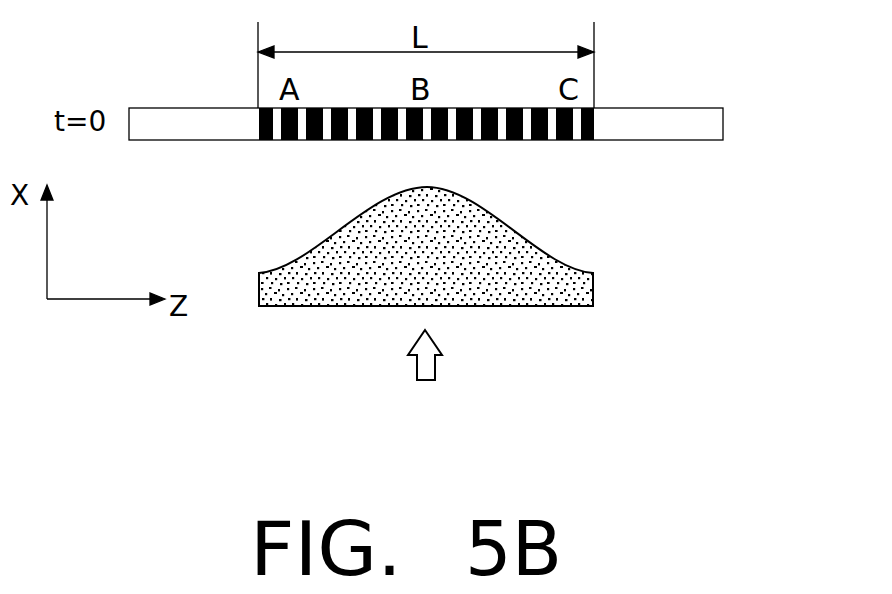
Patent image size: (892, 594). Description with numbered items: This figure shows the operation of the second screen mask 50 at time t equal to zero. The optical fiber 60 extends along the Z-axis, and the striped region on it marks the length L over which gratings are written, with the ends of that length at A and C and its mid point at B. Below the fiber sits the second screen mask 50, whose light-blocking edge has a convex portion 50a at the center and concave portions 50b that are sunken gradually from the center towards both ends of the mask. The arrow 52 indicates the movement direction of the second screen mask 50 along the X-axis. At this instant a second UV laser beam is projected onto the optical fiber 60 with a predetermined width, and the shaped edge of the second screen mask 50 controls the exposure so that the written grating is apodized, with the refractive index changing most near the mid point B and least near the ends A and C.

The second screen mask 50 is at (538, 307).
The convex portion 50a is at (447, 192).
The concave portions 50b is at (277, 267).
The movement direction 52 is at (417, 368).
The optical fiber 60 is at (677, 113).